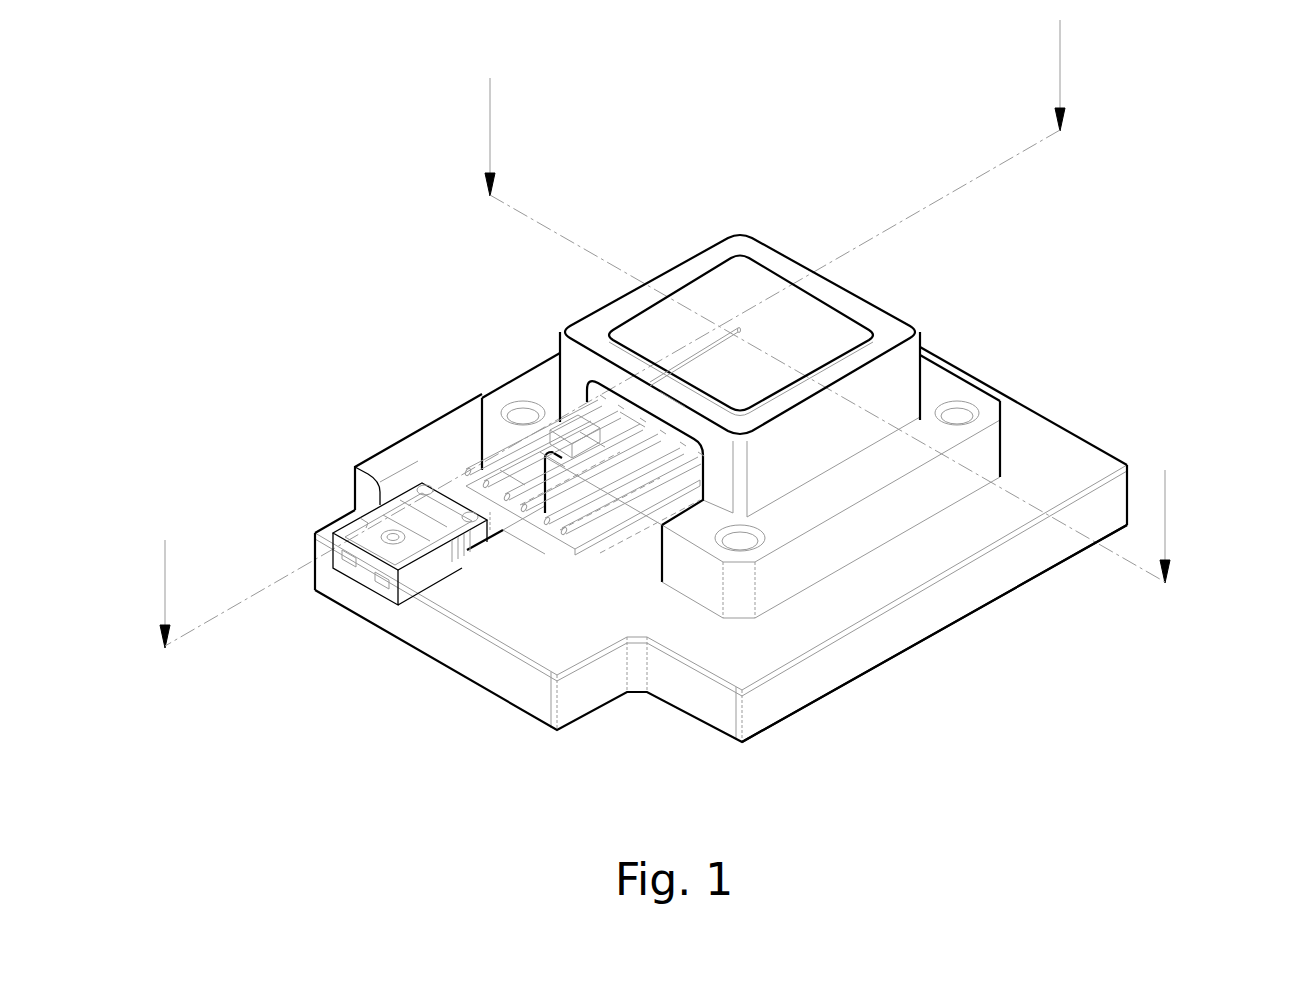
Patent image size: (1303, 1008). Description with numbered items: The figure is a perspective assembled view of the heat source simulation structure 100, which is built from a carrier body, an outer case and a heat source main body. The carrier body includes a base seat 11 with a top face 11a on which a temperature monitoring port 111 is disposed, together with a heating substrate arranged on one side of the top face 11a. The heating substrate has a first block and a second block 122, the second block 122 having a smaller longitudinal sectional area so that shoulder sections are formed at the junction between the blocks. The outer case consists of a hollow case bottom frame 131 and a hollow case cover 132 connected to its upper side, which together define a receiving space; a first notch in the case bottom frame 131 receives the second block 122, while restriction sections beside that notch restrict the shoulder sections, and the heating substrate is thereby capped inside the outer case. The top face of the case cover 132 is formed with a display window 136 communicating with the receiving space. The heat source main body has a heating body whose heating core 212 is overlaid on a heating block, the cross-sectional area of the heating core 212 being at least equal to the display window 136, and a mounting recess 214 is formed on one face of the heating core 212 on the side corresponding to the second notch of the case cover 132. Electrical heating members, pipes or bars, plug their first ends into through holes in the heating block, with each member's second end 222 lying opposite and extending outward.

The heat source simulation structure 100 is at (1243, 110).
The base seat 11 is at (1003, 607).
The top face 11a is at (858, 603).
The temperature monitoring port 111 is at (355, 537).
The second block 122 is at (666, 498).
The case bottom frame 131 is at (527, 393).
The case cover 132 is at (545, 385).
The display window 136 is at (882, 300).
The heating core 212 is at (748, 278).
The mounting recess 214 is at (698, 345).
The second end 222 is at (473, 462).